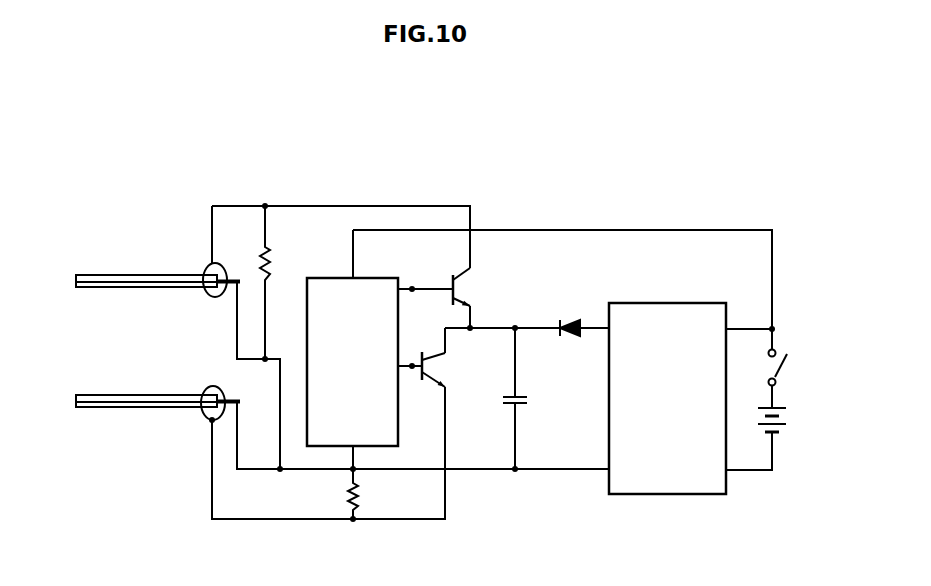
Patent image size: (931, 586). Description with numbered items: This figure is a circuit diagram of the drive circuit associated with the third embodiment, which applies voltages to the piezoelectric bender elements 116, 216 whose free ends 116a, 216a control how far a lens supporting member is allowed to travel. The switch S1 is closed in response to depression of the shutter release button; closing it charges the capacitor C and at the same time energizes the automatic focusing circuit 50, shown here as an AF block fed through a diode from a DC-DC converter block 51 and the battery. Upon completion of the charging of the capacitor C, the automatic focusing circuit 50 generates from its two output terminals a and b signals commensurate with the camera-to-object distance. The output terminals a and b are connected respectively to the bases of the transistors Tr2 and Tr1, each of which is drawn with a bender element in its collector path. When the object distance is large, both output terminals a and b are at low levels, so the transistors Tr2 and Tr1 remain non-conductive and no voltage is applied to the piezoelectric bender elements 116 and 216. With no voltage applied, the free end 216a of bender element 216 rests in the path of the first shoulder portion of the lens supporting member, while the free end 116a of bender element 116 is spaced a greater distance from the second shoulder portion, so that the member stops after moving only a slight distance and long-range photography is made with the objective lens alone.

The piezoelectric bender element 216 is at (67, 294).
The free end 216a is at (72, 273).
The piezoelectric bender element 116 is at (74, 415).
The free end 116a is at (77, 396).
The automatic focusing circuit 50 is at (317, 291).
The DC-DC converter 51 is at (718, 310).
The output terminal a is at (411, 287).
The output terminal b is at (411, 364).
The transistor Tr1 is at (421, 378).
The transistor Tr2 is at (453, 277).
The capacitor C is at (528, 400).
The switch S1 is at (778, 351).